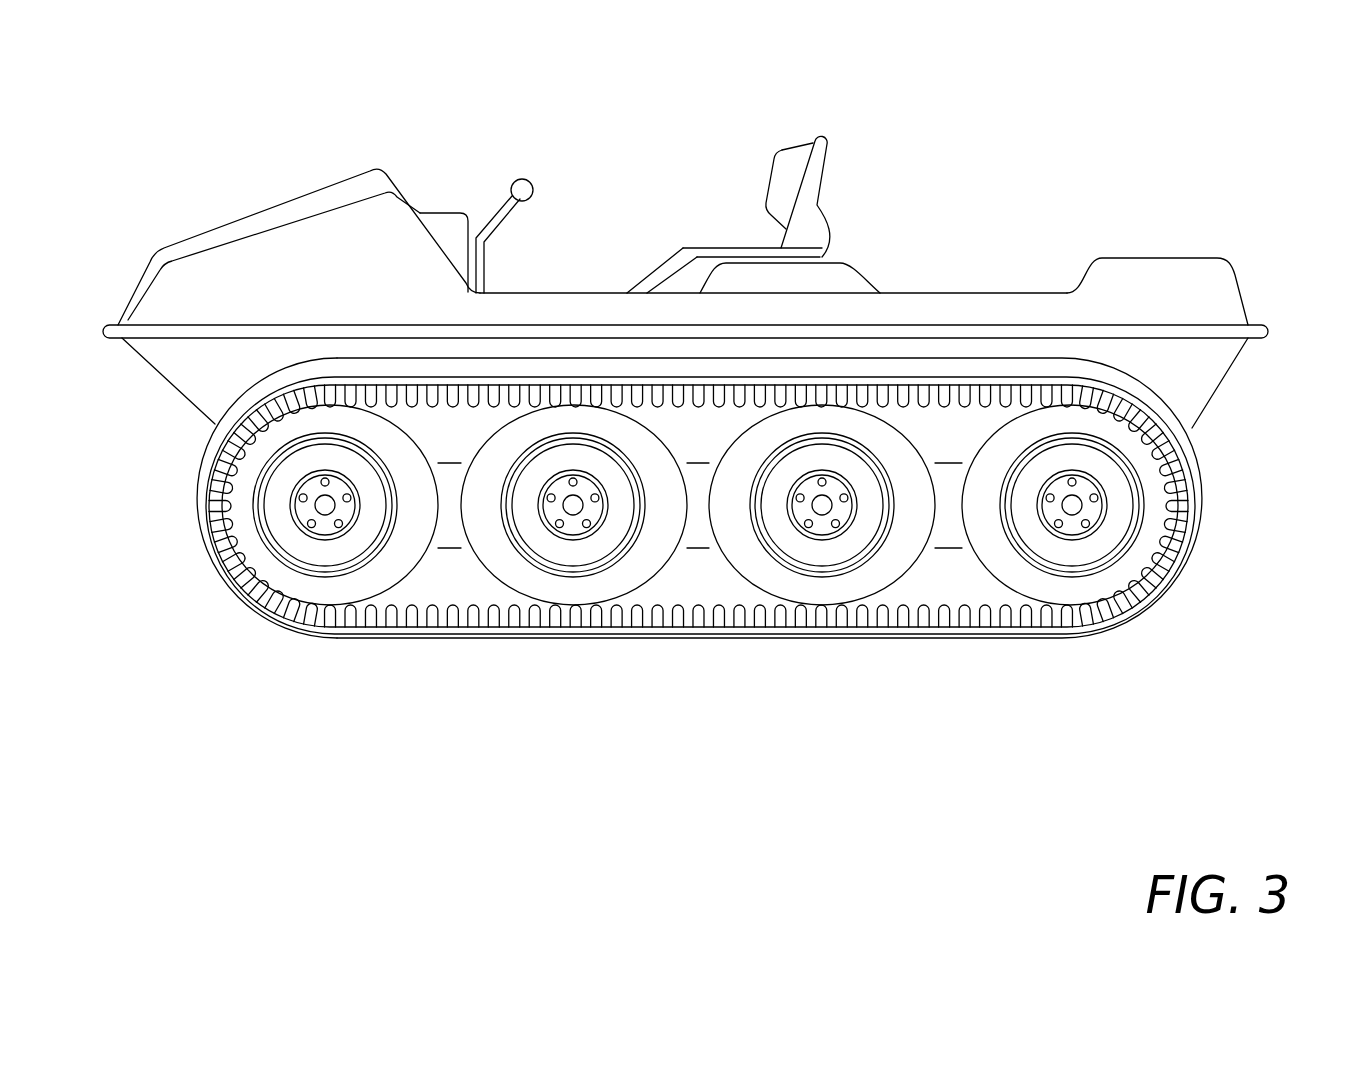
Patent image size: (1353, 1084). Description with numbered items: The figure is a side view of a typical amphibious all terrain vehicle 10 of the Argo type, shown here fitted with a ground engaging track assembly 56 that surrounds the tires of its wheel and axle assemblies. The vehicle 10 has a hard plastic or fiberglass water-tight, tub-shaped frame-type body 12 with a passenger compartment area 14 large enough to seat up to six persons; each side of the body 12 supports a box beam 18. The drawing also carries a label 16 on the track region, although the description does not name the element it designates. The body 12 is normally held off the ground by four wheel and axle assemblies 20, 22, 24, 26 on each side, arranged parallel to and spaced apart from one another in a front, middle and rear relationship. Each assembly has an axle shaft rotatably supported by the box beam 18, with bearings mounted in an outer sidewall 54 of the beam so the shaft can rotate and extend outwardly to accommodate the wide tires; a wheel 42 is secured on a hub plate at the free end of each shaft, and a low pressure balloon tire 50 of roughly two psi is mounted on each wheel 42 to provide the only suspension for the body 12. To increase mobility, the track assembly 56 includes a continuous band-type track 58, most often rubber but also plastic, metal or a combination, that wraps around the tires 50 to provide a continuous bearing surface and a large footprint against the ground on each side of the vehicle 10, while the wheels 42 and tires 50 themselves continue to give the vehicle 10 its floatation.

The amphibious all terrain vehicle 10 is at (693, 428).
The body 12 is at (1228, 377).
The passenger compartment area 14 is at (1020, 295).
The track assembly 16 is at (910, 390).
The box beam 18 is at (947, 533).
The wheel and axle assembly 20 is at (328, 557).
The wheel and axle assembly 22 is at (576, 557).
The wheel and axle assembly 24 is at (825, 557).
The wheel and axle assembly 26 is at (1075, 557).
The wheel 42 is at (292, 543).
The balloon tire 50 is at (337, 587).
The outer sidewall 54 is at (448, 480).
The track assembly 56 is at (215, 578).
The track 58 is at (448, 637).